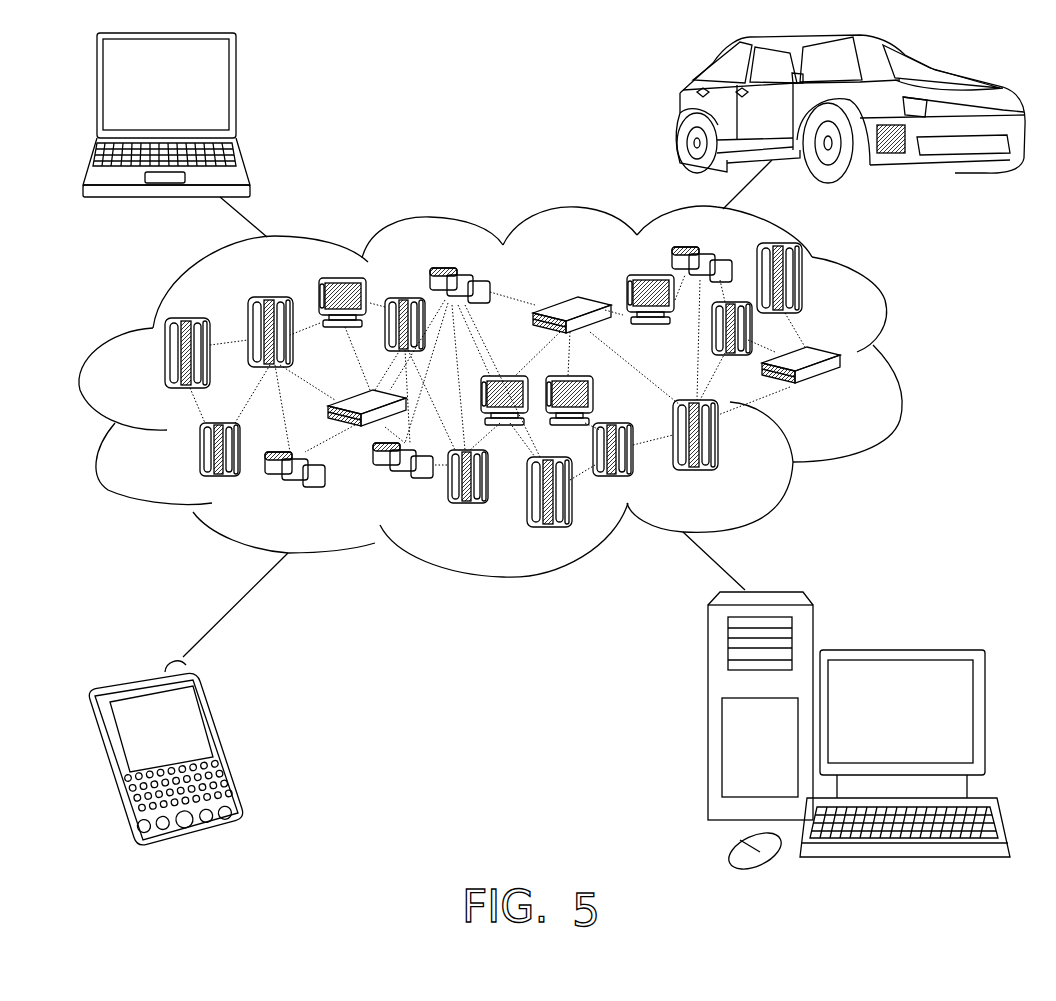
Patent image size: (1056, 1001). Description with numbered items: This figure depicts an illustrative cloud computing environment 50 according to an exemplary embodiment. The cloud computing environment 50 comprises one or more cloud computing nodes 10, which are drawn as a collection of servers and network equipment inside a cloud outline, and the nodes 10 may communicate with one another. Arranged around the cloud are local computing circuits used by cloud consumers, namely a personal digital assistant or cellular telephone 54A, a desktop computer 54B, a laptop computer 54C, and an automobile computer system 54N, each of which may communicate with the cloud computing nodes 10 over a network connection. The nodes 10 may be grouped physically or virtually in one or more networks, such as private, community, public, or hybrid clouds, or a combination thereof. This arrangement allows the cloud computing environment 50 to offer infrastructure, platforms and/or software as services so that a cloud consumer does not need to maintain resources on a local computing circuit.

The cloud computing environment 50 is at (903, 365).
The cloud computing nodes 10 is at (840, 392).
The personal digital assistant (PDA) or cellular telephone 54A is at (227, 740).
The desktop computer 54B is at (900, 648).
The laptop computer 54C is at (236, 92).
The automobile computer system 54N is at (678, 108).